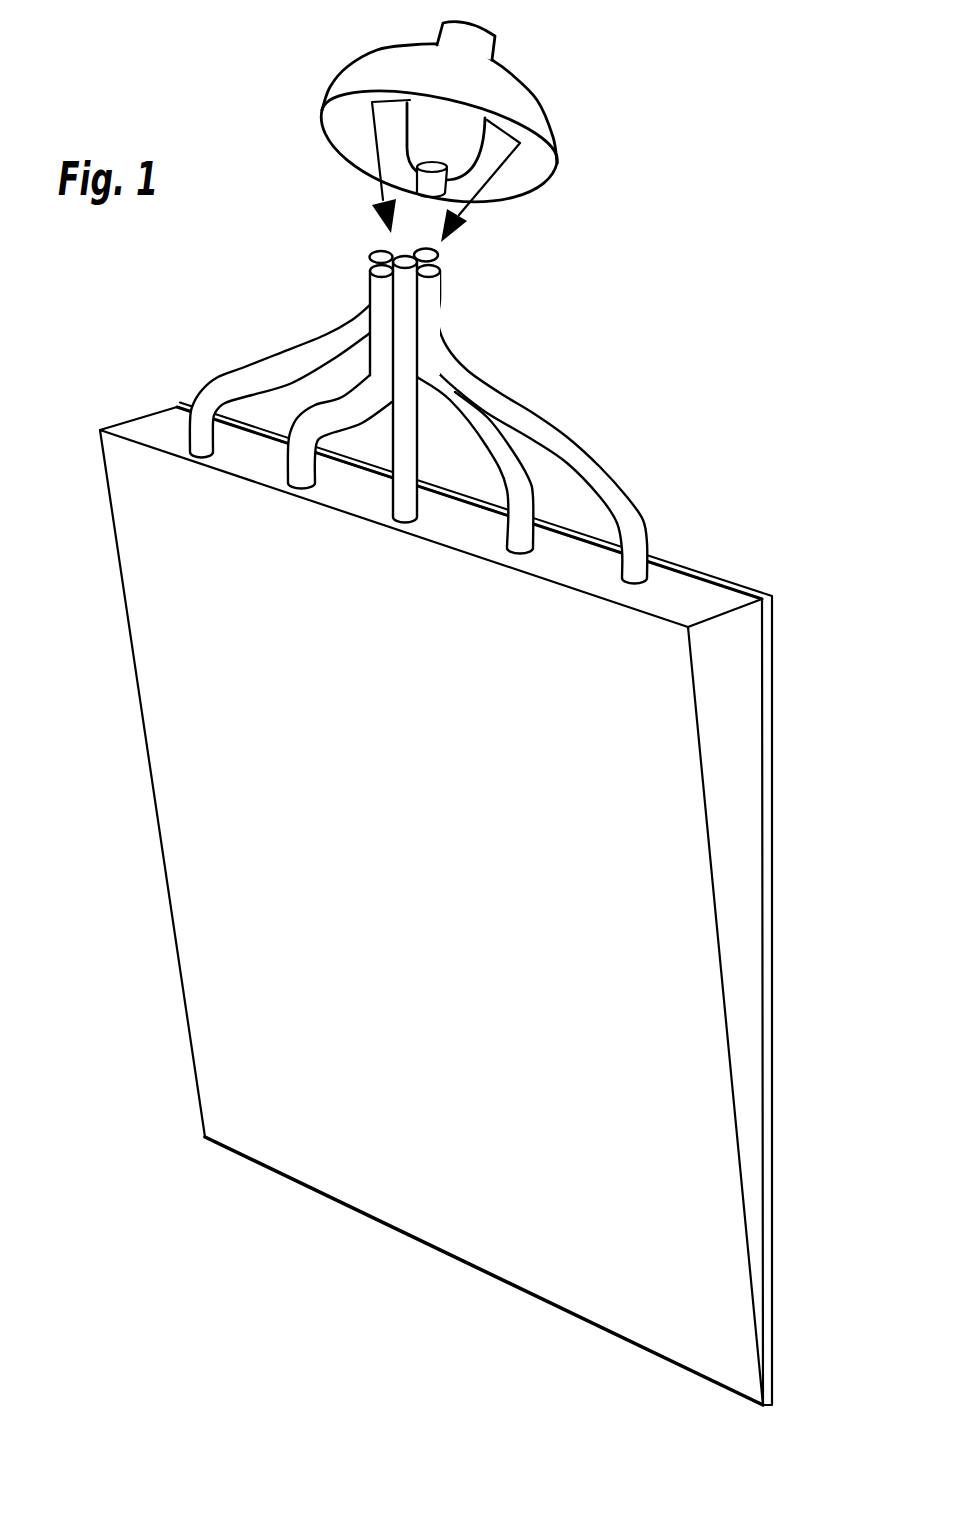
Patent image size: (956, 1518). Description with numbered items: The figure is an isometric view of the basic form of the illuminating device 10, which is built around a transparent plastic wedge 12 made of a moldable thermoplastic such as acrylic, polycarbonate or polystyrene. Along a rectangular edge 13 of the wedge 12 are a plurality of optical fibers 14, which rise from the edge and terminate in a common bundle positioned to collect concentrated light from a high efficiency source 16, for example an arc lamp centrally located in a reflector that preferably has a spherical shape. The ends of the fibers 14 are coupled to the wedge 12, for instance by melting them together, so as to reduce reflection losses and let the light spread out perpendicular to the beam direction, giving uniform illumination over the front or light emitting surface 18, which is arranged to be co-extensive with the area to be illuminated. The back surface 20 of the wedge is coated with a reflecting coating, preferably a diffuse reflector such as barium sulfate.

The illuminating device 10 is at (130, 845).
The transparent plastic wedge 12 is at (140, 700).
The rectangular edge 13 is at (700, 590).
The optical fibers 14 is at (243, 353).
The high efficiency source 16 is at (575, 131).
The front or light emitting surface 18 is at (382, 855).
The back surface 20 is at (773, 856).